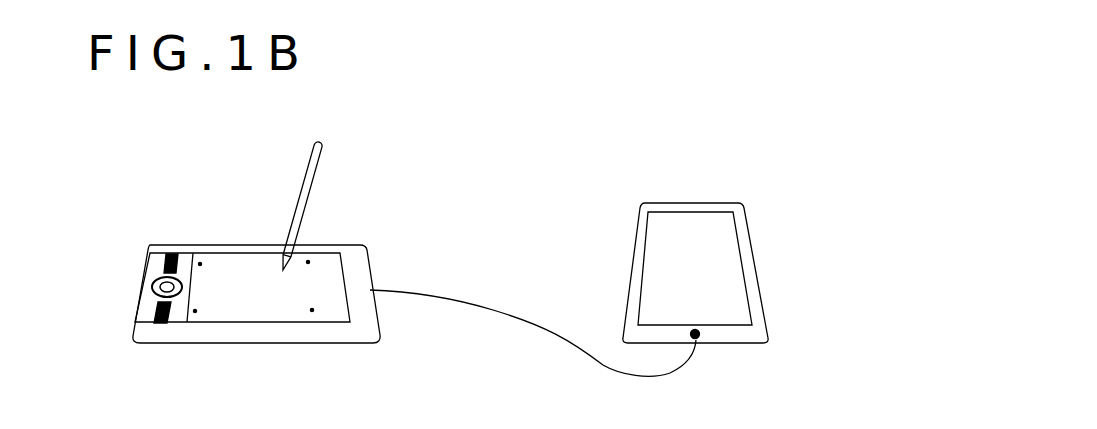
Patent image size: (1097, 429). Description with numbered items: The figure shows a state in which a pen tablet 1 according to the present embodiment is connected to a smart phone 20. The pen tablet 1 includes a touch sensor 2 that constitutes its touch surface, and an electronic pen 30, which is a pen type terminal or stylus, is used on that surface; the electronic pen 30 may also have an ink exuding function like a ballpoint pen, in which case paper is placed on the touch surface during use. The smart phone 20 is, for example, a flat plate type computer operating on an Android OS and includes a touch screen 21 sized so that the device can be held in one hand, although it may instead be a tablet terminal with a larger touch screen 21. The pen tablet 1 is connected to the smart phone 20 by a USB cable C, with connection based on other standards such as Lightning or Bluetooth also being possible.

The pen tablet 1 is at (170, 252).
The touch sensor 2 is at (238, 252).
The electronic pen 30 is at (322, 143).
The USB cable C is at (492, 308).
The smart phone 20 is at (710, 203).
The touch screen 21 is at (728, 235).